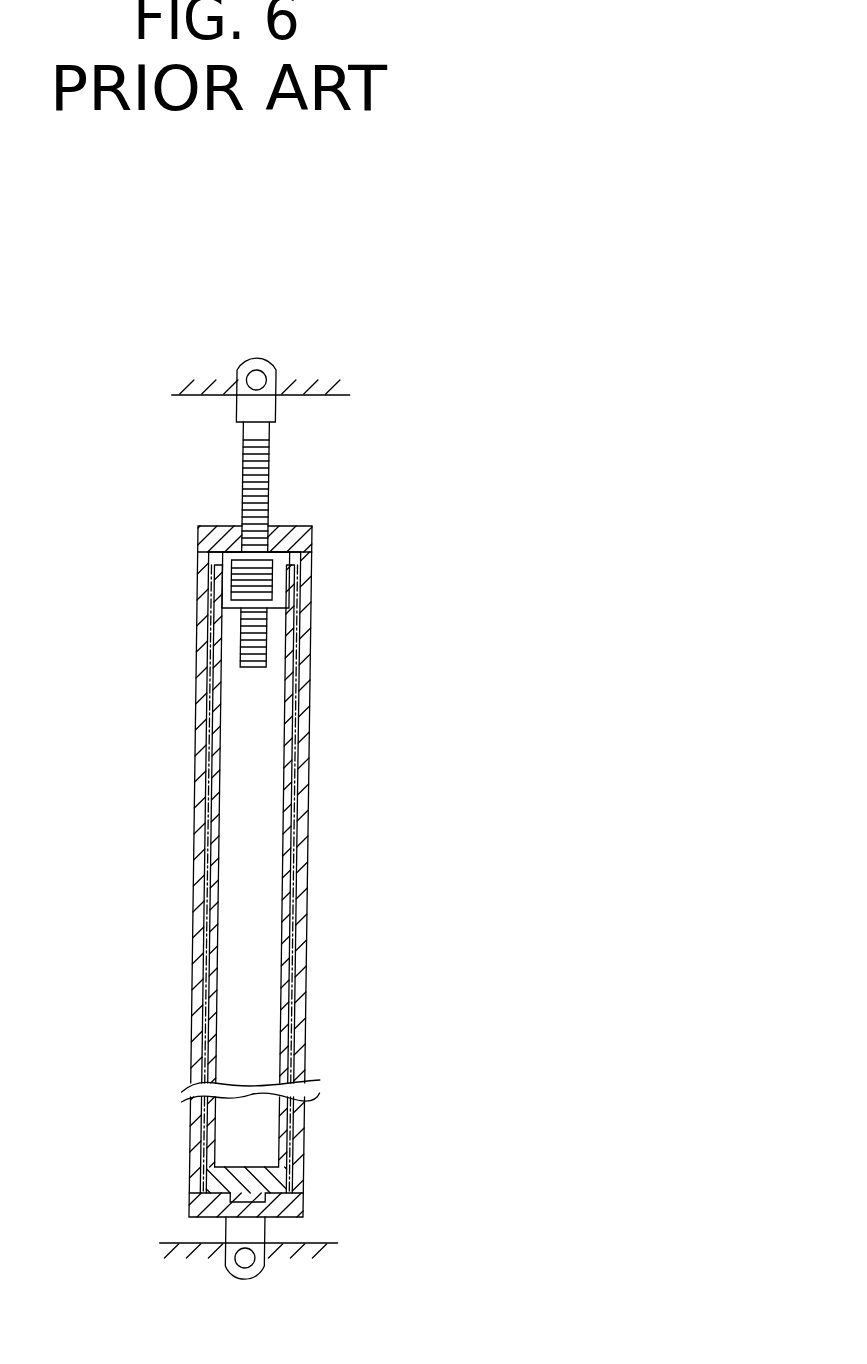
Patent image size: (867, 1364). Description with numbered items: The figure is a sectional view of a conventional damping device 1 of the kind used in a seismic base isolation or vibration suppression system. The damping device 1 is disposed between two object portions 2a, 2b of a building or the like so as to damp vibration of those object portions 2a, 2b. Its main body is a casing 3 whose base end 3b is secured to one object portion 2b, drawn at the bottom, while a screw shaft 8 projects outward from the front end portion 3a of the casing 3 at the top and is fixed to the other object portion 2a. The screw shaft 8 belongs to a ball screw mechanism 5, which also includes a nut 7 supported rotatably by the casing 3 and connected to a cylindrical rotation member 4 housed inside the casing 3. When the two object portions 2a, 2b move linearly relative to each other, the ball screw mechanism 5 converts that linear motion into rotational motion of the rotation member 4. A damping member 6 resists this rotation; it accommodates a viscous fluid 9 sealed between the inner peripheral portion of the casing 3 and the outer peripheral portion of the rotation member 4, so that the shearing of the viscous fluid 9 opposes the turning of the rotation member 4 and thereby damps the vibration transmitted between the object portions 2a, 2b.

The damping device 1 is at (348, 597).
The object portion 2a is at (318, 382).
The object portion 2b is at (313, 1253).
The casing 3 is at (312, 673).
The front end portion 3a is at (307, 552).
The base end 3b is at (252, 1233).
The cylindrical rotation member 4 is at (278, 1000).
The ball screw mechanism 5 is at (305, 525).
The damping member 6 is at (292, 890).
The nut 7 is at (217, 555).
The screw shaft 8 is at (260, 432).
The viscous fluid 9 is at (293, 830).